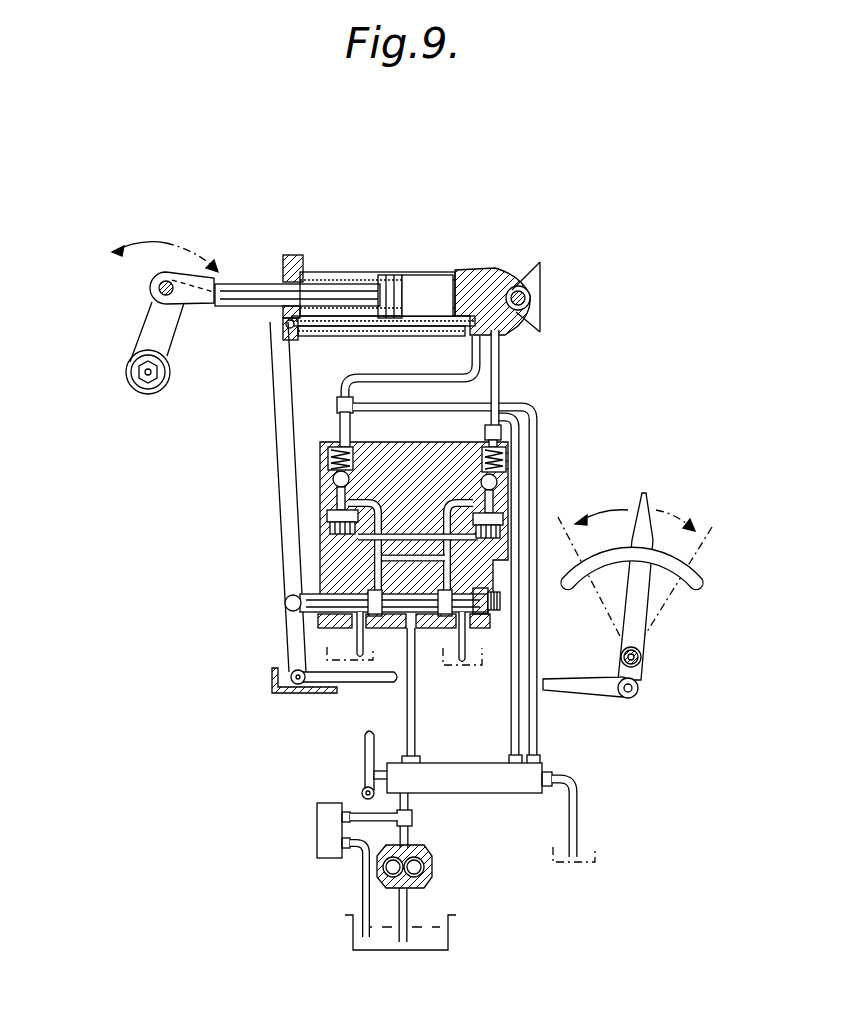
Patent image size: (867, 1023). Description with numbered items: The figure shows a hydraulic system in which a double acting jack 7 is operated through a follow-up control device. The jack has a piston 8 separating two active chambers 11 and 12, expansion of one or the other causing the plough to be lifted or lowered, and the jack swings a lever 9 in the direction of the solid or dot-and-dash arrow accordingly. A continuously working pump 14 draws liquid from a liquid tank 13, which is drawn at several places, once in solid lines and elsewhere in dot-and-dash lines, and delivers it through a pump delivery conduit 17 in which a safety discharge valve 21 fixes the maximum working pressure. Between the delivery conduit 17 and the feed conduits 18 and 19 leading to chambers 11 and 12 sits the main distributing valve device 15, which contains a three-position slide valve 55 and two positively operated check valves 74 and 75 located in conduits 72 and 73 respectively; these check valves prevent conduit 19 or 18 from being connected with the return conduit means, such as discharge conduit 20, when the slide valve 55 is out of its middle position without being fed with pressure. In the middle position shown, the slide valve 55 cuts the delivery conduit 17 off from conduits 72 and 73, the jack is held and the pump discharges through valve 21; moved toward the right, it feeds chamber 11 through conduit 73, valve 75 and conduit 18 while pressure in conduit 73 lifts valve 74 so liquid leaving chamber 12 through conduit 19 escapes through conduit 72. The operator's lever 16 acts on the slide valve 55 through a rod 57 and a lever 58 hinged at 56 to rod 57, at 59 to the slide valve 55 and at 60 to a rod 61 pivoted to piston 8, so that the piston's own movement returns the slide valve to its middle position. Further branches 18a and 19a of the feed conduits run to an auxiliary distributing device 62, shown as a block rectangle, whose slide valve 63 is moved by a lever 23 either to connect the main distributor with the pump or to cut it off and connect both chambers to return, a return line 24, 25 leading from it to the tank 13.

The jack 7 is at (338, 270).
The piston 8 is at (398, 278).
The lever 9 is at (142, 326).
The active chamber 11 is at (433, 282).
The active chamber 12 is at (317, 281).
The liquid tank 13 is at (340, 642).
The pump 14 is at (428, 877).
The main distributing valve device 15 is at (318, 557).
The lever 16 is at (641, 592).
The pump delivery conduit 17 is at (413, 662).
The feed conduit 18 is at (501, 368).
The pipe 18a is at (523, 455).
The feed conduit 19 is at (472, 355).
The pipe 19a is at (540, 472).
The discharge conduit 20 is at (364, 634).
The safety discharge valve 21 is at (318, 825).
The lever 23 is at (365, 742).
The return pipe 24 is at (603, 818).
The return pipe 25 is at (580, 815).
The slide valve 55 is at (402, 592).
The hinge point 56 is at (282, 678).
The rod 57 is at (600, 690).
The lever 58 is at (276, 478).
The hinge point 59 is at (286, 598).
The hinge point 60 is at (271, 327).
The rod 61 is at (217, 309).
The auxiliary distributing device 62 is at (488, 788).
The slide valve 63 is at (381, 771).
The conduit 72 is at (373, 573).
The conduit 73 is at (451, 583).
The check valve 74 is at (350, 477).
The check valve 75 is at (480, 483).